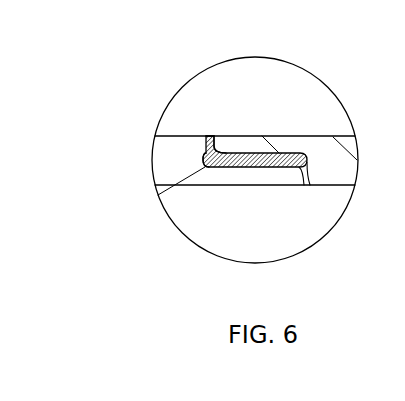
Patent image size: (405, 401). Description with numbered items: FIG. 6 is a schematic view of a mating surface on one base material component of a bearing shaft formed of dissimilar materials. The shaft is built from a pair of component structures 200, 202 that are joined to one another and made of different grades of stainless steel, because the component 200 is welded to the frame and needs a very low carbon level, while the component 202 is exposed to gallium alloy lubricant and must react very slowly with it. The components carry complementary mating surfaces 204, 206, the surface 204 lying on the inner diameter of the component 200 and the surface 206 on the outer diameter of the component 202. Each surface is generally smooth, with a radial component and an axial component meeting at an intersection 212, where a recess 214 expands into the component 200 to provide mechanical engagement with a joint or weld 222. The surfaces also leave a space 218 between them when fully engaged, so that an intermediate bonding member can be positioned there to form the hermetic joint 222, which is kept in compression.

The component structure 200 is at (168, 185).
The component structure 202 is at (333, 175).
The mating surface 204 is at (260, 170).
The mating surface 206 is at (281, 154).
The intersection 212 is at (210, 174).
The recess 214 is at (203, 160).
The space 218 is at (255, 146).
The joint or weld 222 is at (248, 153).